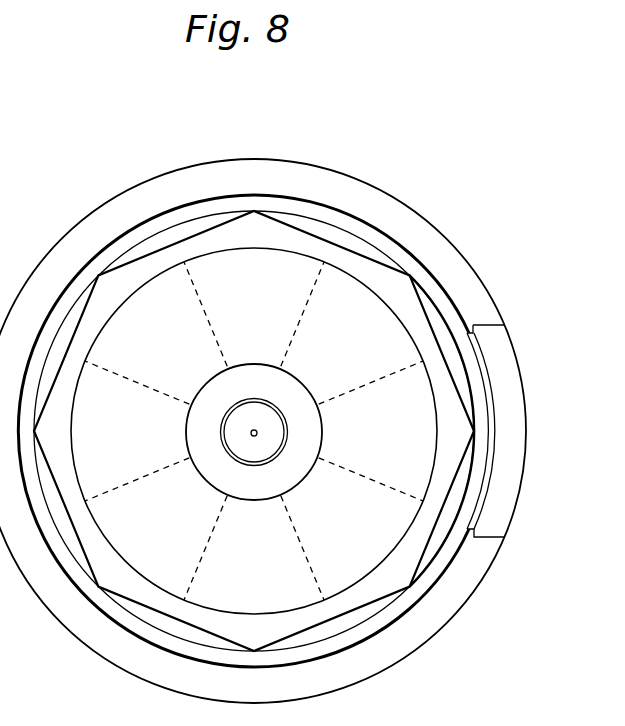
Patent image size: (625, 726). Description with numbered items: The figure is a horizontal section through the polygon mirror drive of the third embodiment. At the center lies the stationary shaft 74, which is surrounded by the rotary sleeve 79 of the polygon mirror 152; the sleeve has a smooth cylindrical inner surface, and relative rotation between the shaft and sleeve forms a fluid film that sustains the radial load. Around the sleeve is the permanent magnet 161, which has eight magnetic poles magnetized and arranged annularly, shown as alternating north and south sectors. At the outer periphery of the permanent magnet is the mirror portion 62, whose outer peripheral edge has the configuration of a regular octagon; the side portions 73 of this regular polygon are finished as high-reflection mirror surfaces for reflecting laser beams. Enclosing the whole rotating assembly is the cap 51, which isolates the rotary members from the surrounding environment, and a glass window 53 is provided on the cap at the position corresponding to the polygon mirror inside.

The cap 51 is at (415, 238).
The glass window 53 is at (519, 353).
The mirror portion 62 is at (272, 237).
The polygon mirror 152 is at (203, 230).
The side portions 73 is at (340, 250).
The permanent magnet 161 is at (155, 298).
The rotary sleeve 79 is at (288, 483).
The stationary shaft 74 is at (254, 432).